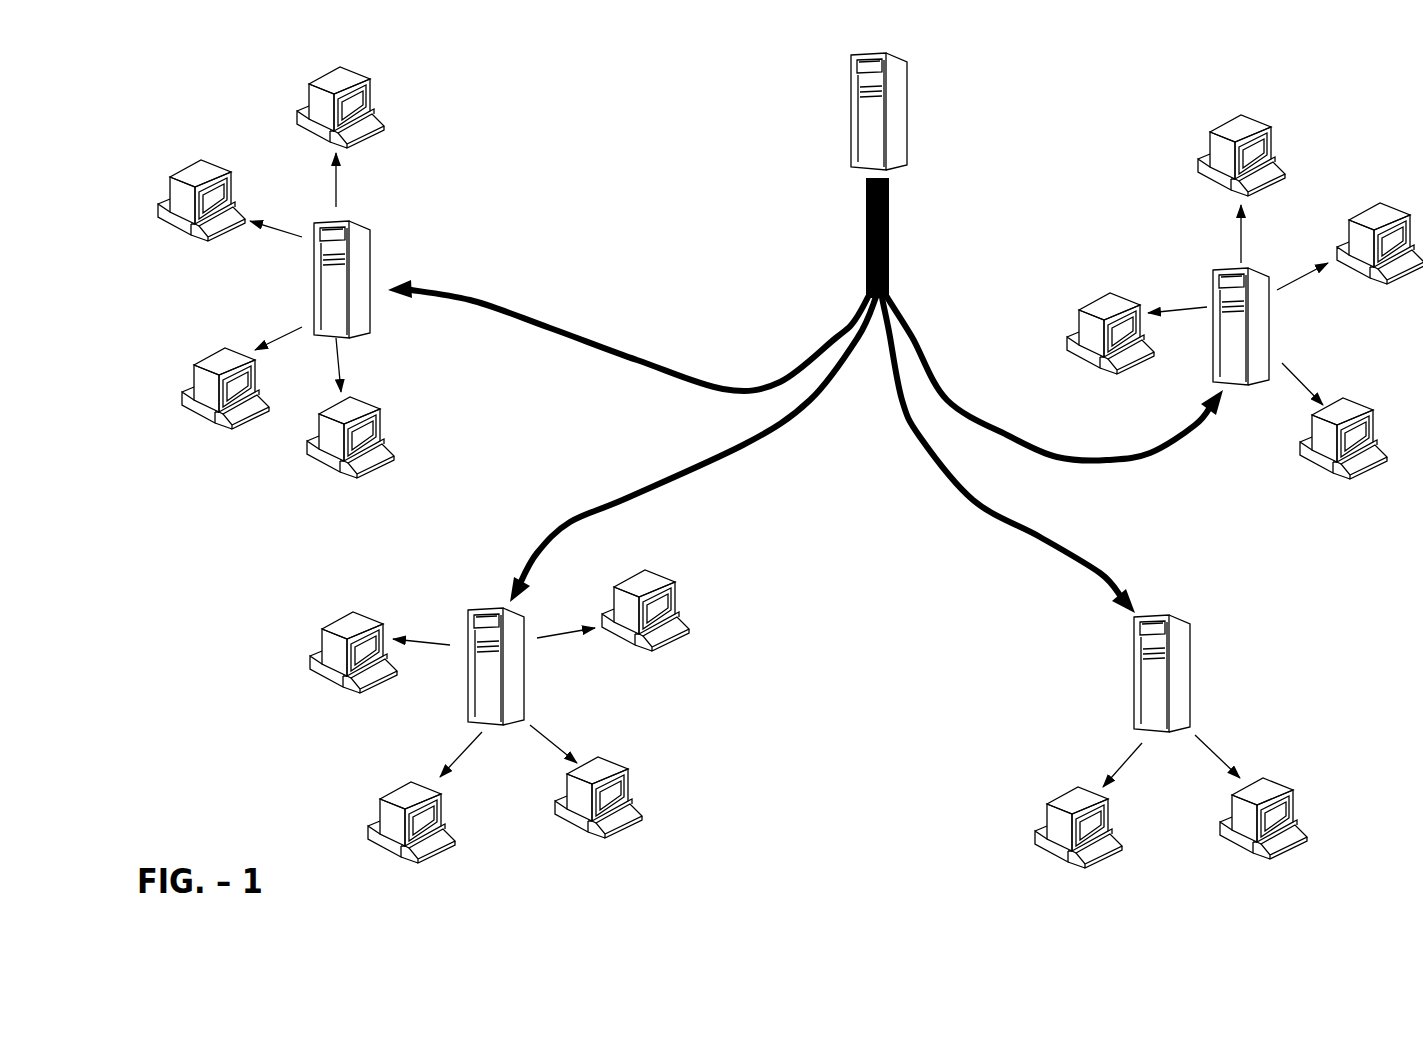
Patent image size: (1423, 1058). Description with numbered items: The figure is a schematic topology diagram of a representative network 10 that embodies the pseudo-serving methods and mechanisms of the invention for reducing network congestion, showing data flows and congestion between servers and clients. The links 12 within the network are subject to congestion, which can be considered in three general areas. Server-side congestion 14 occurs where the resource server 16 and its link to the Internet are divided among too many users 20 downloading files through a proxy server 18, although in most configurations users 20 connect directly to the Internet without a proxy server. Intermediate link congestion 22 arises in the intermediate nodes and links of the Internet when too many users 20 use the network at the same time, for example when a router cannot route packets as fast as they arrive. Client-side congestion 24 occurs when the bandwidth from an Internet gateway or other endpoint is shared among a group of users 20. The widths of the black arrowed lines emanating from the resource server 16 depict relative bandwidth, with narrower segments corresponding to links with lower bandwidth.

The network 10 is at (1113, 73).
The links 12 is at (640, 362).
The server-side congestion 14 is at (905, 232).
The resource server 16 is at (887, 53).
The proxy server 18 is at (470, 698).
The users 20 is at (647, 580).
The intermediate link congestion 22 is at (572, 522).
The client-side congestion 24 is at (567, 645).